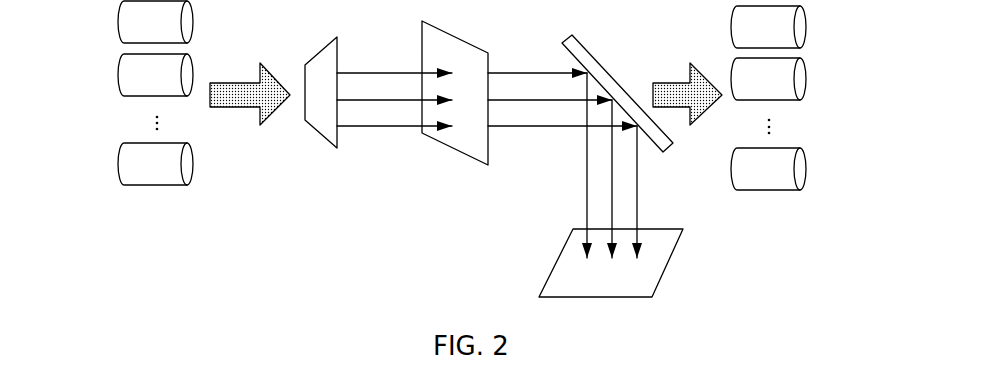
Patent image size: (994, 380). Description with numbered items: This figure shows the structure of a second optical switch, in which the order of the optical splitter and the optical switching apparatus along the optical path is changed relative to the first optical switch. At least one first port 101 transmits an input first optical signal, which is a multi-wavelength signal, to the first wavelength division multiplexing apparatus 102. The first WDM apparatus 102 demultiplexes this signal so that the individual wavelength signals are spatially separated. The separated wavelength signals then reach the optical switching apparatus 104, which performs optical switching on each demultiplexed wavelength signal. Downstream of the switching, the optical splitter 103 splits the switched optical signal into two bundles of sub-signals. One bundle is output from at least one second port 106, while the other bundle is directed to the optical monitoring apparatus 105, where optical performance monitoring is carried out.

The first port 101 is at (110, 2).
The first wavelength division multiplexing apparatus 102 is at (322, 50).
The optical splitter 103 is at (588, 53).
The optical switching apparatus 104 is at (458, 35).
The optical monitoring apparatus 105 is at (558, 262).
The second port 106 is at (825, 10).